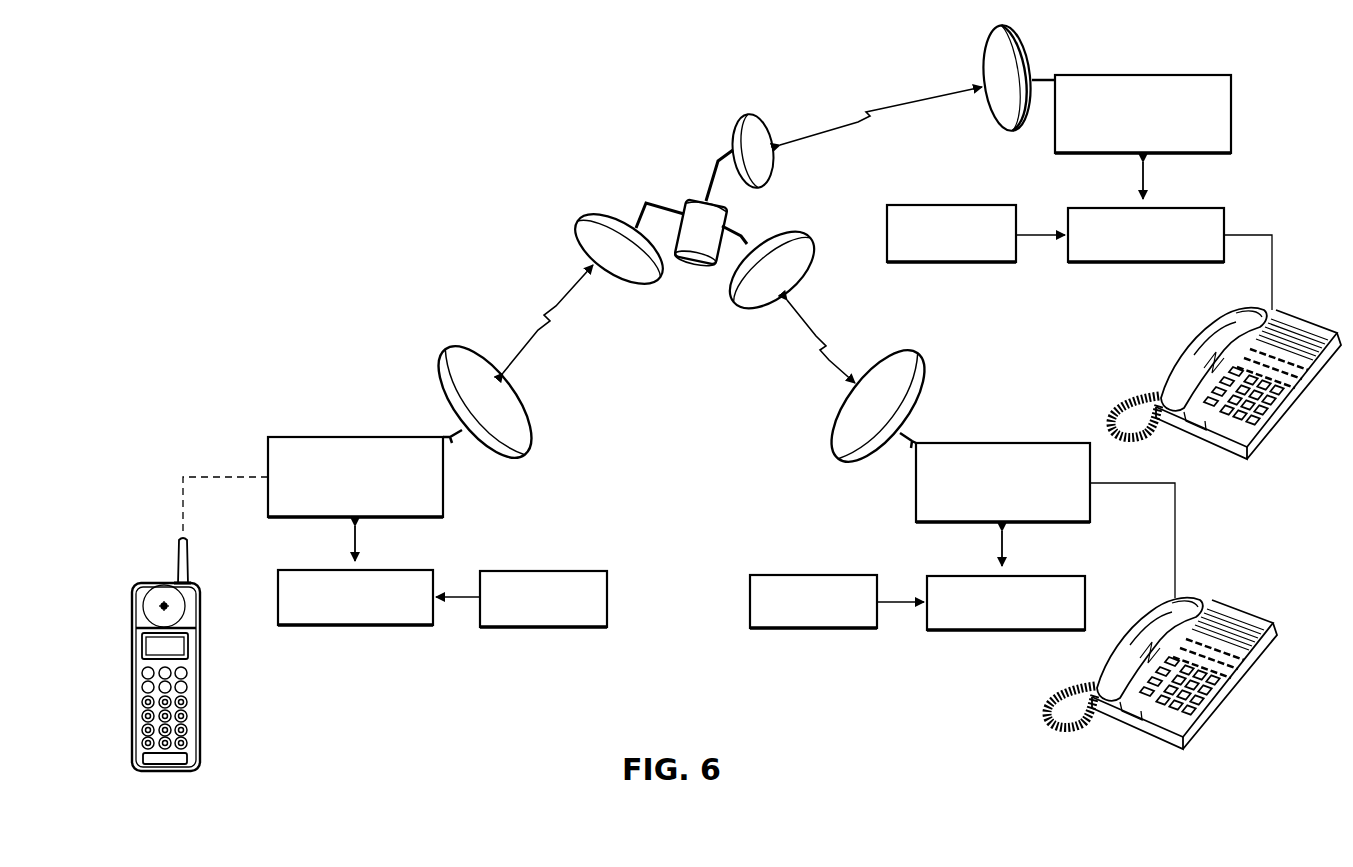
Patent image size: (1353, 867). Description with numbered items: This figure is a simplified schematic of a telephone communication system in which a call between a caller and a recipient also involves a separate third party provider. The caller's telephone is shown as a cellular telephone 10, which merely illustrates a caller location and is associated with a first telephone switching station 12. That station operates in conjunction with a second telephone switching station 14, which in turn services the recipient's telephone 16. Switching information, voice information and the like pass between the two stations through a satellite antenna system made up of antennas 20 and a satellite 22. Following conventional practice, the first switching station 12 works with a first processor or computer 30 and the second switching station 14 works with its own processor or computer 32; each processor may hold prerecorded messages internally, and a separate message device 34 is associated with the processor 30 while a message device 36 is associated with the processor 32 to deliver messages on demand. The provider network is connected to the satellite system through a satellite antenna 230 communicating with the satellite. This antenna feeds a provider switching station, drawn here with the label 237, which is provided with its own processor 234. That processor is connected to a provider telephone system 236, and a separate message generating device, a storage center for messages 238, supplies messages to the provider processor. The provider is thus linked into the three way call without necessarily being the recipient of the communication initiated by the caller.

The cellular telephone 10 is at (200, 724).
The first telephone switching station 12 is at (314, 434).
The second telephone switching station 14 is at (1020, 440).
The recipient's telephone 16 is at (1140, 727).
The antennas 20 is at (526, 420).
The satellite 22 is at (696, 197).
The first processor 30 is at (348, 627).
The second processor 32 is at (976, 632).
The message device 34 is at (550, 629).
The message device 36 is at (798, 630).
The satellite antenna 230 is at (1038, 52).
The processor 234 is at (1190, 206).
The provider telephone system 236 is at (1202, 330).
The switching station 237 is at (1173, 73).
The storage center for messages 238 is at (958, 200).